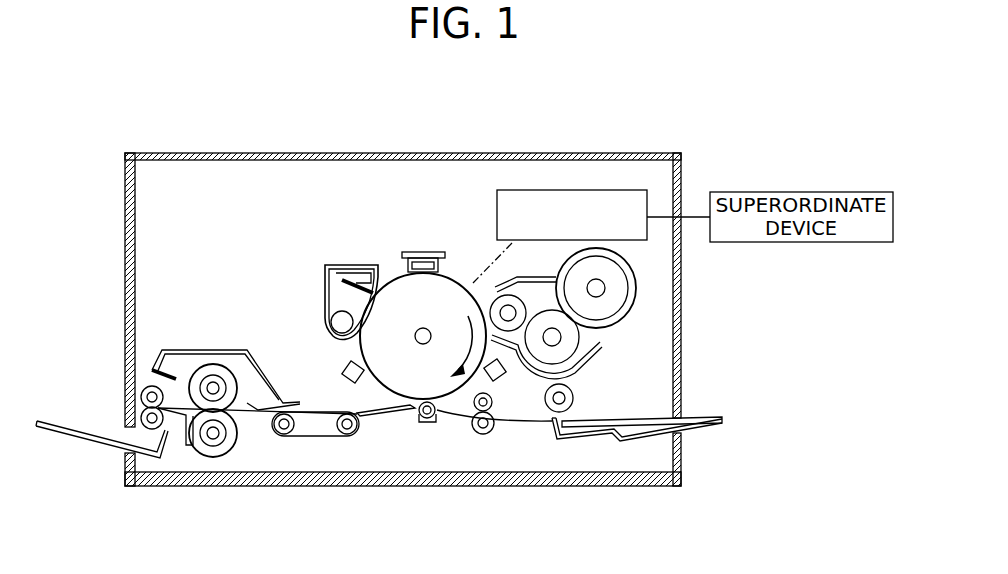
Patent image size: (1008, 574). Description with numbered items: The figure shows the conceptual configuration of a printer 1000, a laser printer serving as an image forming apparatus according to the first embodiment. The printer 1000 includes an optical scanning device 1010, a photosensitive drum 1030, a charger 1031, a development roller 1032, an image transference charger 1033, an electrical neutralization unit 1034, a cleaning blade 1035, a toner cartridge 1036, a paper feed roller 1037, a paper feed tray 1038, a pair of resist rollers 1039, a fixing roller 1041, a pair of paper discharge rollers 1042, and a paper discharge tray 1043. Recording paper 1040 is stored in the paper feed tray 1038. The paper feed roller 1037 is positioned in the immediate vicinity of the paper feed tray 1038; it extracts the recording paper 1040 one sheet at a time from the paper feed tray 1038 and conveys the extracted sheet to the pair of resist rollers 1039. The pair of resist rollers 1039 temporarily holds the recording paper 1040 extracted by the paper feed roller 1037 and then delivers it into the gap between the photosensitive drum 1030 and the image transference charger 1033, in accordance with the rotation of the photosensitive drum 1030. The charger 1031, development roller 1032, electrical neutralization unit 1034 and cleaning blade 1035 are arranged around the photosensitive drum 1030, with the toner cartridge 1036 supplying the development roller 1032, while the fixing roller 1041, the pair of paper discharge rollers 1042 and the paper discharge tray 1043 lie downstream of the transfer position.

The printer 1000 is at (464, 131).
The optical scanning device 1010 is at (592, 190).
The photosensitive drum 1030 is at (397, 281).
The charger 1031 is at (420, 253).
The development roller 1032 is at (490, 300).
The image transference charger 1033 is at (418, 415).
The electrical neutralization unit 1034 is at (342, 376).
The cleaning blade 1035 is at (352, 290).
The toner cartridge 1036 is at (637, 303).
The paper feed roller 1037 is at (573, 397).
The paper feed tray 1038 is at (710, 430).
The pair of resist rollers 1039 is at (490, 430).
The recording paper 1040 is at (643, 420).
The fixing roller 1041 is at (207, 362).
The pair of paper discharge rollers 1042 is at (143, 386).
The paper discharge tray 1043 is at (85, 438).